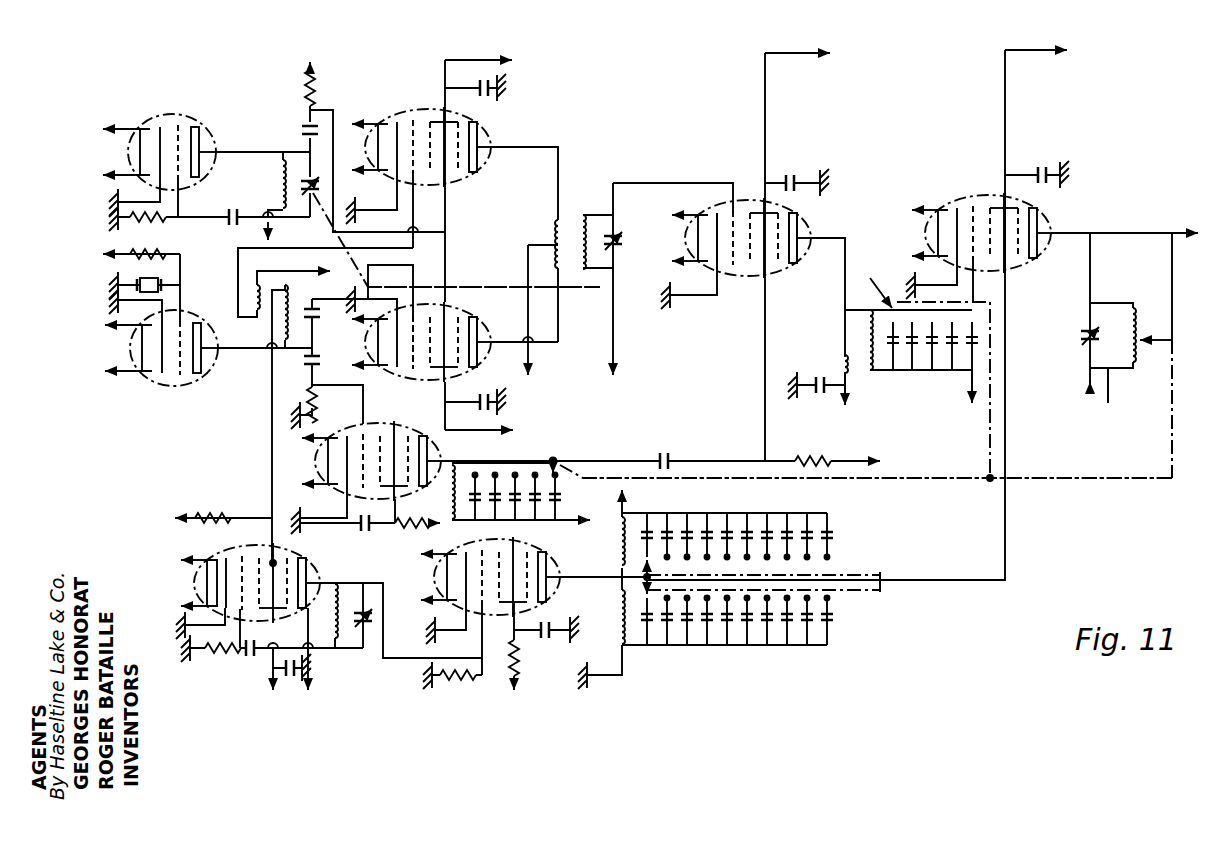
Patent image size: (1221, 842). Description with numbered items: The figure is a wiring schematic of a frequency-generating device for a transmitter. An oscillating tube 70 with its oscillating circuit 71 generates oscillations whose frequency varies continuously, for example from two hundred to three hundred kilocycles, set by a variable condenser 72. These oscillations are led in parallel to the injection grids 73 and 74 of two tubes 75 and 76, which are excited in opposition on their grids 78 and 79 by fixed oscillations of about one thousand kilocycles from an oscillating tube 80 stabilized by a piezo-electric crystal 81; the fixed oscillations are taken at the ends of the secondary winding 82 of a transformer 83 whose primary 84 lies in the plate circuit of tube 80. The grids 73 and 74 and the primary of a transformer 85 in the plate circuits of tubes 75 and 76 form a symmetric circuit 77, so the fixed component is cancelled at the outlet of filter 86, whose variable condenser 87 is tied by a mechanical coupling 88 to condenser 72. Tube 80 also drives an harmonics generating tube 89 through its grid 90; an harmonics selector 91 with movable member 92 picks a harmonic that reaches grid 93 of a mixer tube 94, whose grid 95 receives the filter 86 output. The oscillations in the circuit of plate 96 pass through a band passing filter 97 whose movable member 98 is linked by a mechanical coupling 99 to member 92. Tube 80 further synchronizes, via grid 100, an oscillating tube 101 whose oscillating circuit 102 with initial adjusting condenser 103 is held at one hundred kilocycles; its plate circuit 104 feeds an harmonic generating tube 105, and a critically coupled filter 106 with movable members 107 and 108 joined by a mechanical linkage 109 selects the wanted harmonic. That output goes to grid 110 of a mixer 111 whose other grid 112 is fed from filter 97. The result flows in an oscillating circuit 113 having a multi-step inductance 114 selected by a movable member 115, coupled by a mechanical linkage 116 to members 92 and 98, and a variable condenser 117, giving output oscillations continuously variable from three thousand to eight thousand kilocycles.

The oscillating tube 70 is at (172, 124).
The oscillating circuit 71 is at (300, 160).
The variable condenser 72 is at (308, 242).
The injection grid 73 is at (447, 157).
The injection grid 74 is at (450, 318).
The tube 75 is at (483, 153).
The tube 76 is at (468, 320).
The symmetric circuit 77 is at (420, 244).
The grid 78 is at (410, 130).
The grid 79 is at (413, 382).
The oscillating tube 80 is at (170, 380).
The piezo-electric crystal 81 is at (153, 283).
The secondary winding 82 is at (257, 303).
The transformer 83 is at (268, 292).
The primary 84 is at (285, 335).
The transformer 85 is at (480, 142).
The filter 86 is at (569, 229).
The variable condenser 87 is at (617, 235).
The mechanical coupling 88 is at (546, 288).
The harmonics generating tube 89 is at (343, 440).
The grid 90 is at (367, 450).
The harmonics selector 91 is at (516, 449).
The movable member 92 is at (553, 460).
The grid 93 is at (768, 262).
The mixer tube 94 is at (742, 215).
The grid 95 is at (735, 245).
The plate 96 is at (812, 236).
The band passing filter 97 is at (900, 362).
The movable member 98 is at (904, 276).
The mechanical coupling 99 is at (918, 476).
The grid 100 is at (273, 563).
The oscillating tube 101 is at (220, 562).
The oscillating circuit 102 is at (345, 600).
The initial adjusting condenser 103 is at (367, 618).
The plate circuit 104 is at (302, 570).
The harmonic generating tube 105 is at (543, 568).
The filter 106 is at (874, 556).
The movable member 107 is at (648, 574).
The movable member 108 is at (647, 590).
The mechanical linkage 109 is at (868, 570).
The grid 110 is at (1006, 255).
The mixer 111 is at (958, 205).
The grid 112 is at (970, 207).
The oscillating circuit 113 is at (1096, 406).
The multi-step inductance 114 is at (1133, 305).
The movable member 115 is at (1110, 352).
The mechanical linkage 116 is at (1128, 476).
The condenser 117 is at (1078, 352).